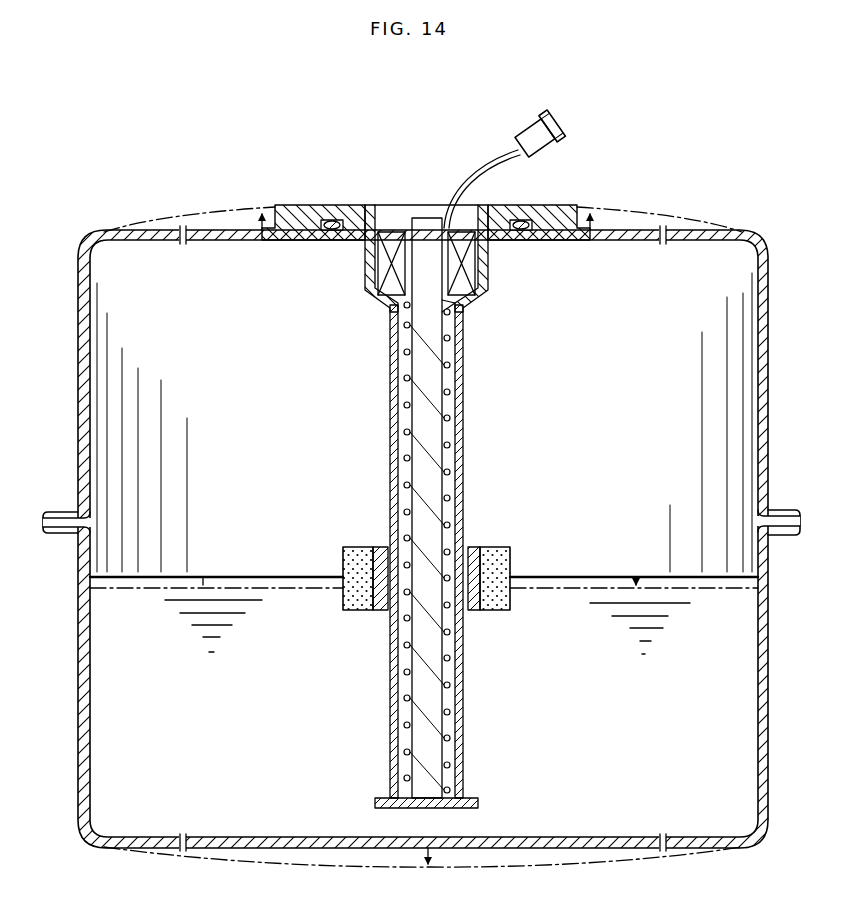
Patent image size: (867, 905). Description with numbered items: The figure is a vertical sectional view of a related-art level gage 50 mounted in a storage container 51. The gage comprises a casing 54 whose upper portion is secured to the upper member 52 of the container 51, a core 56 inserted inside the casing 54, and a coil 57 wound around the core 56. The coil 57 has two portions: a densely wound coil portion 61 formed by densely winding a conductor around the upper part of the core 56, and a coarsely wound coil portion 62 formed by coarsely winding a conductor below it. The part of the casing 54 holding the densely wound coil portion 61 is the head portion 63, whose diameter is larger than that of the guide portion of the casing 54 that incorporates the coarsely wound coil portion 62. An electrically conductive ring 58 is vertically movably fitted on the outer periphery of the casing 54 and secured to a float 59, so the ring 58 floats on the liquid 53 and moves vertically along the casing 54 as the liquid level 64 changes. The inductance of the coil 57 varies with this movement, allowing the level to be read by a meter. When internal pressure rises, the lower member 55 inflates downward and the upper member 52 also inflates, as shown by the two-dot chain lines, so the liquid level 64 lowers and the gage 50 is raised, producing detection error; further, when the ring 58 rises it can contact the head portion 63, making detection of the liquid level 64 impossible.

The level gage 50 is at (439, 513).
The storage container 51 is at (80, 256).
The upper member 52 is at (233, 242).
The liquid 53 is at (678, 584).
The casing 54 is at (392, 344).
The lower member 55 is at (332, 836).
The core 56 is at (440, 350).
The coil 57 is at (462, 316).
The electrically conductive ring 58 is at (478, 545).
The float 59 is at (507, 545).
The densely wound coil portion 61 is at (480, 262).
The coarsely wound coil portion 62 is at (452, 386).
The head portion 63 is at (372, 266).
The liquid level 64 is at (578, 575).